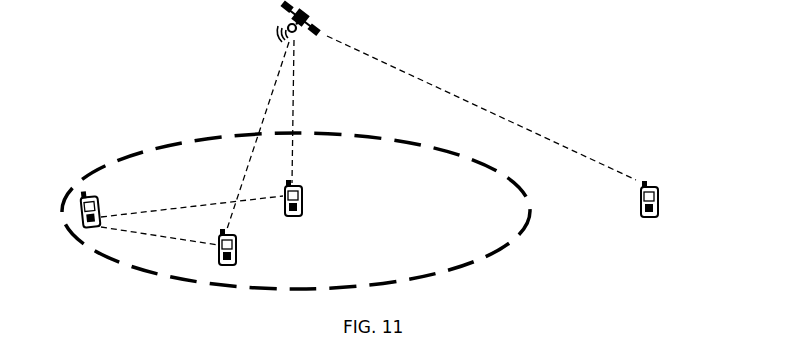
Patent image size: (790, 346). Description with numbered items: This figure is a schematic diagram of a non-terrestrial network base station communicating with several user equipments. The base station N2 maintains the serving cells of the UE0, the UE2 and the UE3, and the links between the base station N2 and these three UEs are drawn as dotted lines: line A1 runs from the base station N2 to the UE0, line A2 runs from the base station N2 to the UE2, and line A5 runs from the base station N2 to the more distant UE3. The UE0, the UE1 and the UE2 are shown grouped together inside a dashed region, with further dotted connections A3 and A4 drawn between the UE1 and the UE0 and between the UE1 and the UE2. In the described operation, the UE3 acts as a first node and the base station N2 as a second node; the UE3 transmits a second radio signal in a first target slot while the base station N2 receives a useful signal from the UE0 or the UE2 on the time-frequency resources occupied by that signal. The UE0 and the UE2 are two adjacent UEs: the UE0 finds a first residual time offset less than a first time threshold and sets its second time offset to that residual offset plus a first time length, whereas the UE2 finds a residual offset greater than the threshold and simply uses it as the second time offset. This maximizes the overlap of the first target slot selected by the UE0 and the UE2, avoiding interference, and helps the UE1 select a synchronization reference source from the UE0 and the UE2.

The base station N2 is at (358, 22).
The dotted line A1 is at (258, 135).
The dotted line A2 is at (296, 111).
The sidelink between UE1 and UE0 A3 is at (159, 236).
The sidelink between UE1 and UE2 A4 is at (192, 206).
The dotted line A5 is at (481, 108).
The UE UE0 is at (225, 258).
The UE UE1 is at (93, 218).
The UE UE2 is at (297, 206).
The UE UE3 is at (652, 209).